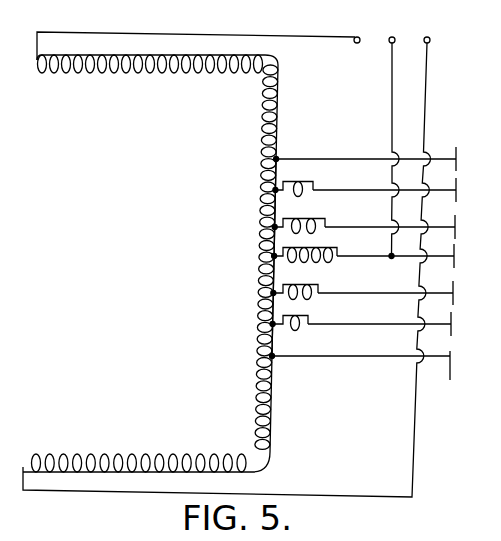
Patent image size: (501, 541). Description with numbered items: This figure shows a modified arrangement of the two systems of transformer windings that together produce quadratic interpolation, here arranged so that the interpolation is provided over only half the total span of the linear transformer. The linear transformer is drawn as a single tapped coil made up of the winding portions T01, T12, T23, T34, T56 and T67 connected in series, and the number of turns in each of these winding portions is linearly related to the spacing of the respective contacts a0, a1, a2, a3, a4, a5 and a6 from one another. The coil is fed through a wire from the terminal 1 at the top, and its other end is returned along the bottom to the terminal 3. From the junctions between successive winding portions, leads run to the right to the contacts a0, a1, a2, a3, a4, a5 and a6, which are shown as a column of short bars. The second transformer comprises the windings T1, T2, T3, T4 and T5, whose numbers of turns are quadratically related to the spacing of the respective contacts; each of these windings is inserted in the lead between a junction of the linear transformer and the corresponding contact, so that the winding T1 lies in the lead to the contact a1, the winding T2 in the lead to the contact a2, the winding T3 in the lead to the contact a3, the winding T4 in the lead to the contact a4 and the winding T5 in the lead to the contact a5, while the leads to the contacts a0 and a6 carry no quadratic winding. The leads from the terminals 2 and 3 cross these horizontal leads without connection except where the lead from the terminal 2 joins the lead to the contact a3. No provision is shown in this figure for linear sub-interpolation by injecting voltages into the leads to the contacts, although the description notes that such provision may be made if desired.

The input terminal 1 is at (199, 37).
The input terminal 2 is at (392, 137).
The input terminal 3 is at (227, 256).
The quadratic series winding T5 is at (314, 183).
The quadratic series winding T4 is at (324, 218).
The quadratic series winding T3 is at (335, 250).
The quadratic series winding T2 is at (316, 286).
The quadratic series winding T1 is at (308, 316).
The linear transformer winding T67 is at (266, 173).
The linear transformer winding T56 is at (265, 218).
The linear transformer winding T34 is at (263, 243).
The linear transformer winding T23 is at (263, 290).
The linear transformer winding T12 is at (264, 322).
The linear transformer winding T01 is at (262, 336).
The contact a6 is at (377, 163).
The contact a5 is at (397, 195).
The contact a4 is at (403, 231).
The contact a3 is at (408, 263).
The contact a2 is at (398, 298).
The contact a1 is at (393, 329).
The contact a0 is at (374, 371).